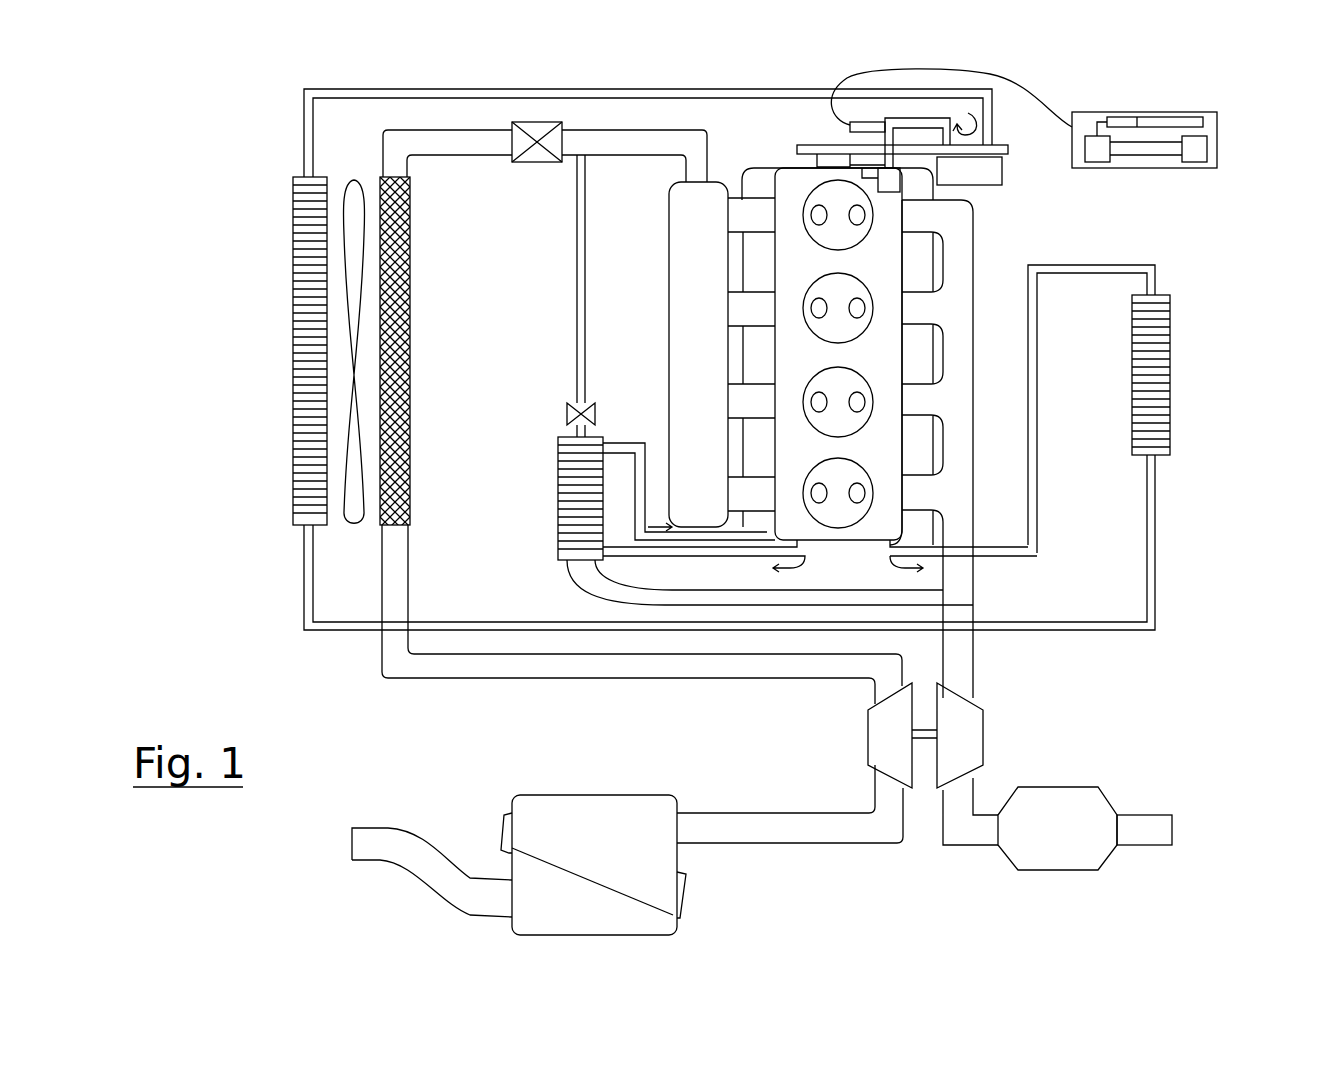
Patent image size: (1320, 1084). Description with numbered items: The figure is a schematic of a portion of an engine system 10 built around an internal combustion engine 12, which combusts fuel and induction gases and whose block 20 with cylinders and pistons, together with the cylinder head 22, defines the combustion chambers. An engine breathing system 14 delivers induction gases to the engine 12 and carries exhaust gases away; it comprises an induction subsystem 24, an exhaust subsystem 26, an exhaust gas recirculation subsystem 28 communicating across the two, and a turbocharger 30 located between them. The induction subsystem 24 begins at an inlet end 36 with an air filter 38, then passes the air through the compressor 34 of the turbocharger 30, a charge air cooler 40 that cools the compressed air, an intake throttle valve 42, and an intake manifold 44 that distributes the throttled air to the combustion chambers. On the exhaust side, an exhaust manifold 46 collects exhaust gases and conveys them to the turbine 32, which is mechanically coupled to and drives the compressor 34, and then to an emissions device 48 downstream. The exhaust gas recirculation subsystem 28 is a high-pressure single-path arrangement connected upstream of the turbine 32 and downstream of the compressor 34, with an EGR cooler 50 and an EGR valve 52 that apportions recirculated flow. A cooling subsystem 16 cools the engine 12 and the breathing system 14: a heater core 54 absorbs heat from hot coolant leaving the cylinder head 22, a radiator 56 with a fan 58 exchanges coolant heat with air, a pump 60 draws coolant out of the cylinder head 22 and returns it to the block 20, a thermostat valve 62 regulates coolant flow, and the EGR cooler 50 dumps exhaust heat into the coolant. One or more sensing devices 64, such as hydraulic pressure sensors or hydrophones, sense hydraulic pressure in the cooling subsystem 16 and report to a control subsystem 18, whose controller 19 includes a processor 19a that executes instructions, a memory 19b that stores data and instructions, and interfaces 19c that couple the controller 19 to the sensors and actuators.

The engine system 10 is at (309, 646).
The internal combustion engine 12 is at (784, 153).
The engine breathing system 14 is at (958, 881).
The cooling subsystem 16 is at (273, 101).
The control subsystem 18 is at (1248, 150).
The controller 19 is at (1212, 162).
The processor 19a is at (1097, 153).
The memory 19b is at (1216, 142).
The interface 19c is at (1117, 117).
The block 20 is at (915, 523).
The cylinder head 22 is at (888, 444).
The induction subsystem 24 is at (781, 765).
The exhaust subsystem 26 is at (1110, 885).
The exhaust gas recirculation subsystem 28 is at (546, 377).
The turbocharger 30 is at (928, 814).
The turbine 32 is at (974, 746).
The compressor 34 is at (902, 746).
The inlet end 36 is at (345, 845).
The air filter 38 is at (541, 950).
The charge air cooler 40 is at (427, 444).
The intake throttle valve 42 is at (528, 173).
The intake manifold 44 is at (713, 364).
The exhaust manifold 46 is at (972, 413).
The emissions device 48 is at (1072, 841).
The EGR cooler 50 is at (580, 522).
The EGR valve 52 is at (553, 417).
The heater core 54 is at (1174, 423).
The radiator 56 is at (289, 233).
The fan 58 is at (360, 168).
The pump 60 is at (977, 172).
The thermostat valve 62 is at (855, 144).
The sensing device 64 is at (863, 123).